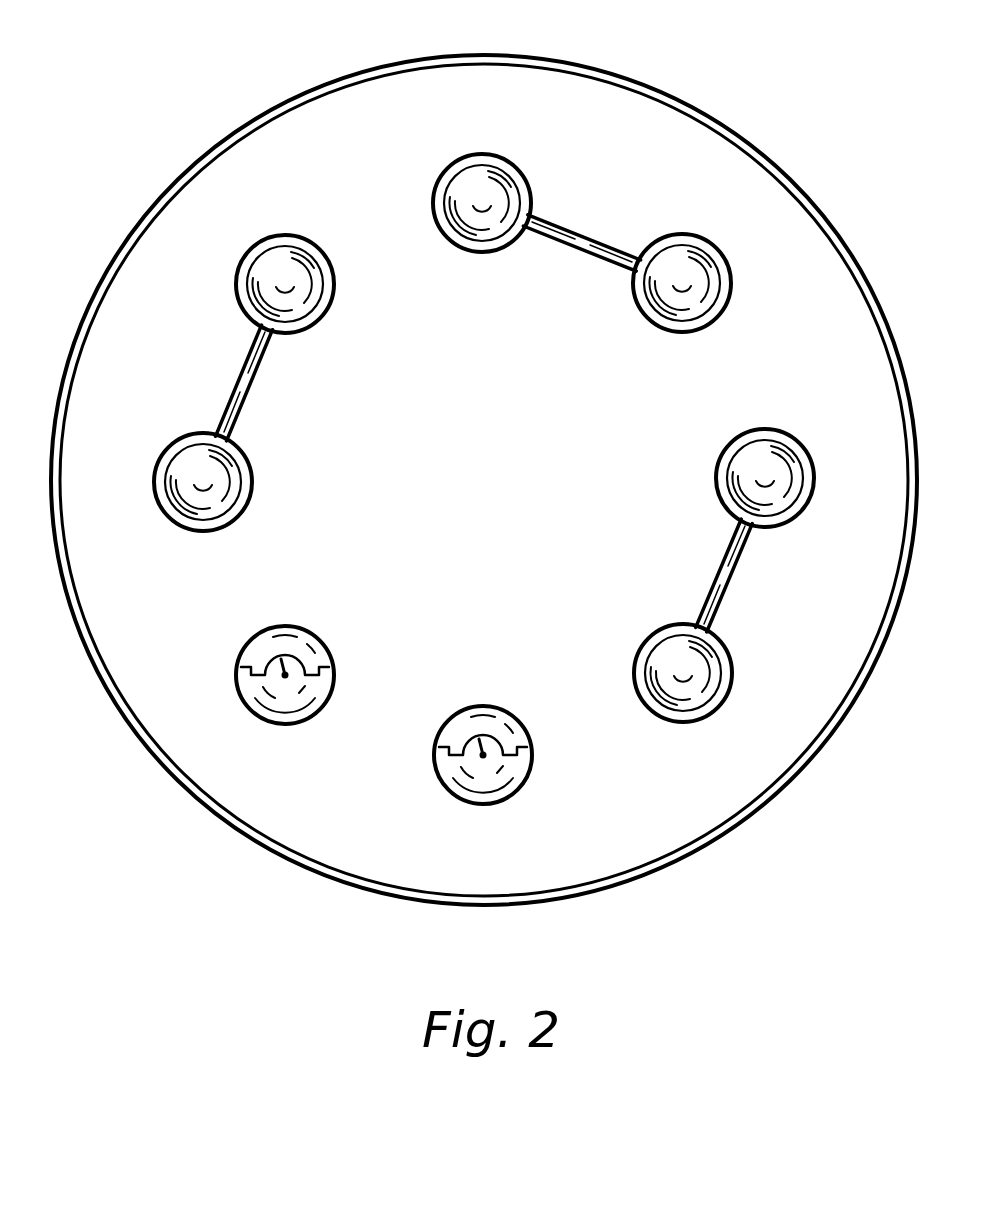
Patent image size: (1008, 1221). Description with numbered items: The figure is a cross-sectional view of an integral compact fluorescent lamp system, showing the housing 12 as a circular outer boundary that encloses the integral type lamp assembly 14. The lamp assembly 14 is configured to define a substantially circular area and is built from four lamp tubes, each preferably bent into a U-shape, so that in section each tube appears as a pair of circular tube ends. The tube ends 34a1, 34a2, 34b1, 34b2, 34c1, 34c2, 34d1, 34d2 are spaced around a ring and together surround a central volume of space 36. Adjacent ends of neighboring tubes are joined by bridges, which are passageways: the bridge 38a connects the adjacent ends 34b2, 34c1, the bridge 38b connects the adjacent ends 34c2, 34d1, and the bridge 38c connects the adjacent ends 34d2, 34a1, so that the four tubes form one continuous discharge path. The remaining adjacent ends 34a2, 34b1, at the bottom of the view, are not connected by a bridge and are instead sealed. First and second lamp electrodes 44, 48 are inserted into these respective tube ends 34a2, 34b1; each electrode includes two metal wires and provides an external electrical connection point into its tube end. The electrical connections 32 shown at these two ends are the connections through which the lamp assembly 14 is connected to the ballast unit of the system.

The housing 12 is at (341, 73).
The lamp assembly 14 is at (140, 118).
The electrical connections 32 is at (241, 667).
The tube end 34a1 is at (190, 530).
The tube end 34a2 is at (330, 645).
The tube end 34b1 is at (530, 768).
The tube end 34b2 is at (698, 722).
The tube end 34c1 is at (745, 430).
The tube end 34c2 is at (684, 234).
The tube end 34d1 is at (470, 155).
The tube end 34d2 is at (302, 238).
The volume of space 36 is at (607, 400).
The bridge 38a is at (737, 573).
The bridge 38b is at (573, 226).
The bridge 38c is at (233, 377).
The first lamp electrode 44 is at (285, 676).
The second lamp electrode 48 is at (483, 757).